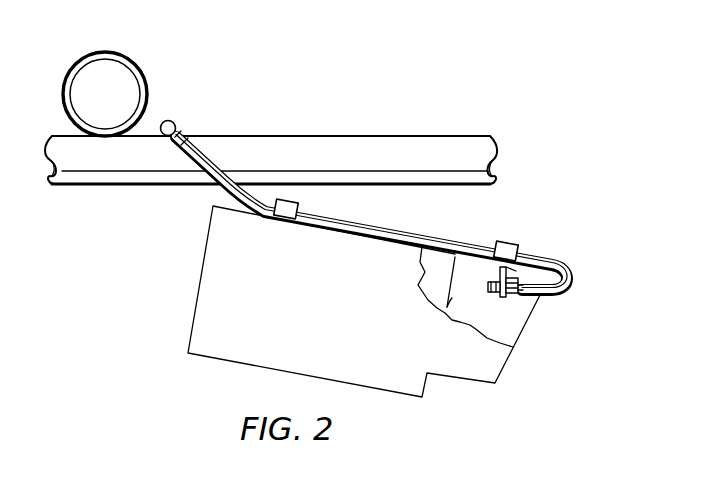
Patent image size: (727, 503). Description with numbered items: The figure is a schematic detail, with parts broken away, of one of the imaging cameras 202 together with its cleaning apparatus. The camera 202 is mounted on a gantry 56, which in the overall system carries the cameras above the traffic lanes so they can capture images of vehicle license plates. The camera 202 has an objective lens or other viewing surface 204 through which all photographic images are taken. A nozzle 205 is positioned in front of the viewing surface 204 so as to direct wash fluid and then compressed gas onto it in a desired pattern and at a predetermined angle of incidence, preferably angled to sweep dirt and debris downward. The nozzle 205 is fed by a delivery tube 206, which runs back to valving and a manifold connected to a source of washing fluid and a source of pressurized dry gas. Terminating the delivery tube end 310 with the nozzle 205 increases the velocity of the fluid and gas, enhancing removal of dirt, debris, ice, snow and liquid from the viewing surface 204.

The gantry 56 is at (77, 63).
The imaging camera 202 is at (345, 308).
The viewing surface 204 is at (452, 298).
The nozzle 205 is at (491, 294).
The delivery tube 206 is at (216, 154).
The delivery tube end 310 is at (574, 271).